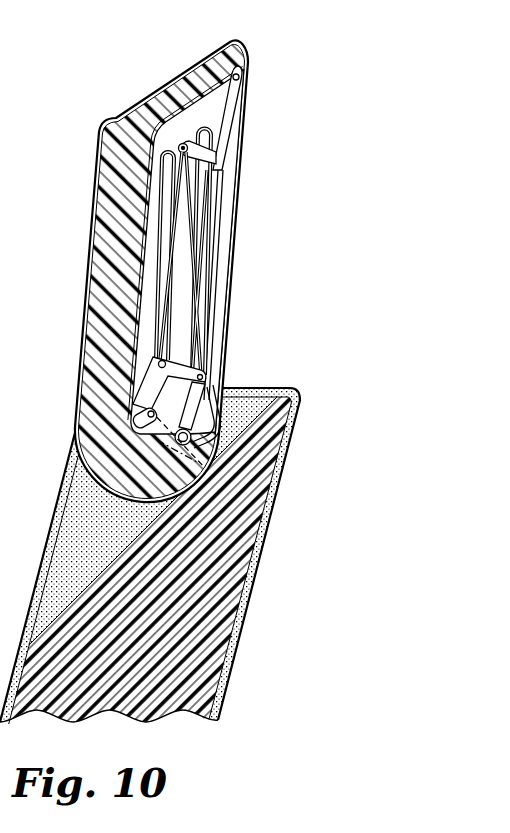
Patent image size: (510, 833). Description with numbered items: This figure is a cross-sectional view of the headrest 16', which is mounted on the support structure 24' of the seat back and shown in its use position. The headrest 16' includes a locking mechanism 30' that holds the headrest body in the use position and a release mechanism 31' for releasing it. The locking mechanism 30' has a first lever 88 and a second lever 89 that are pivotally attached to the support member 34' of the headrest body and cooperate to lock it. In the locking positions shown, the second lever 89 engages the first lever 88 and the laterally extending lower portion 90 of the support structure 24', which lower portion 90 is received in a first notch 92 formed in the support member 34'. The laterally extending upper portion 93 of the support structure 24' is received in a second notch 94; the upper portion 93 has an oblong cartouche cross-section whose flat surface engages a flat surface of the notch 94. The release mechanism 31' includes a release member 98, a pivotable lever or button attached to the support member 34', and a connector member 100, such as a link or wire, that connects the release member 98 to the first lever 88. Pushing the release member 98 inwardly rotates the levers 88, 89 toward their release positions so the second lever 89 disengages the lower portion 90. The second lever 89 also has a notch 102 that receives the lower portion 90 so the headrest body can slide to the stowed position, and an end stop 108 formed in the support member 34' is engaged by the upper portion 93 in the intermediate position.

The headrest 16' is at (186, 262).
The release mechanism 31' is at (202, 261).
The locking mechanism 30' is at (149, 251).
The support member 34' is at (249, 265).
The release member 98 is at (240, 128).
The connector member 100 is at (217, 243).
The notch 102 is at (142, 362).
The first lever 88 is at (148, 392).
The support structure 24' is at (99, 409).
The upper portion 93 is at (135, 422).
The end stop 108 is at (143, 423).
The second notch 94 is at (150, 430).
The second lever 89 is at (190, 413).
The lower portion 90 is at (185, 436).
The first notch 92 is at (248, 438).